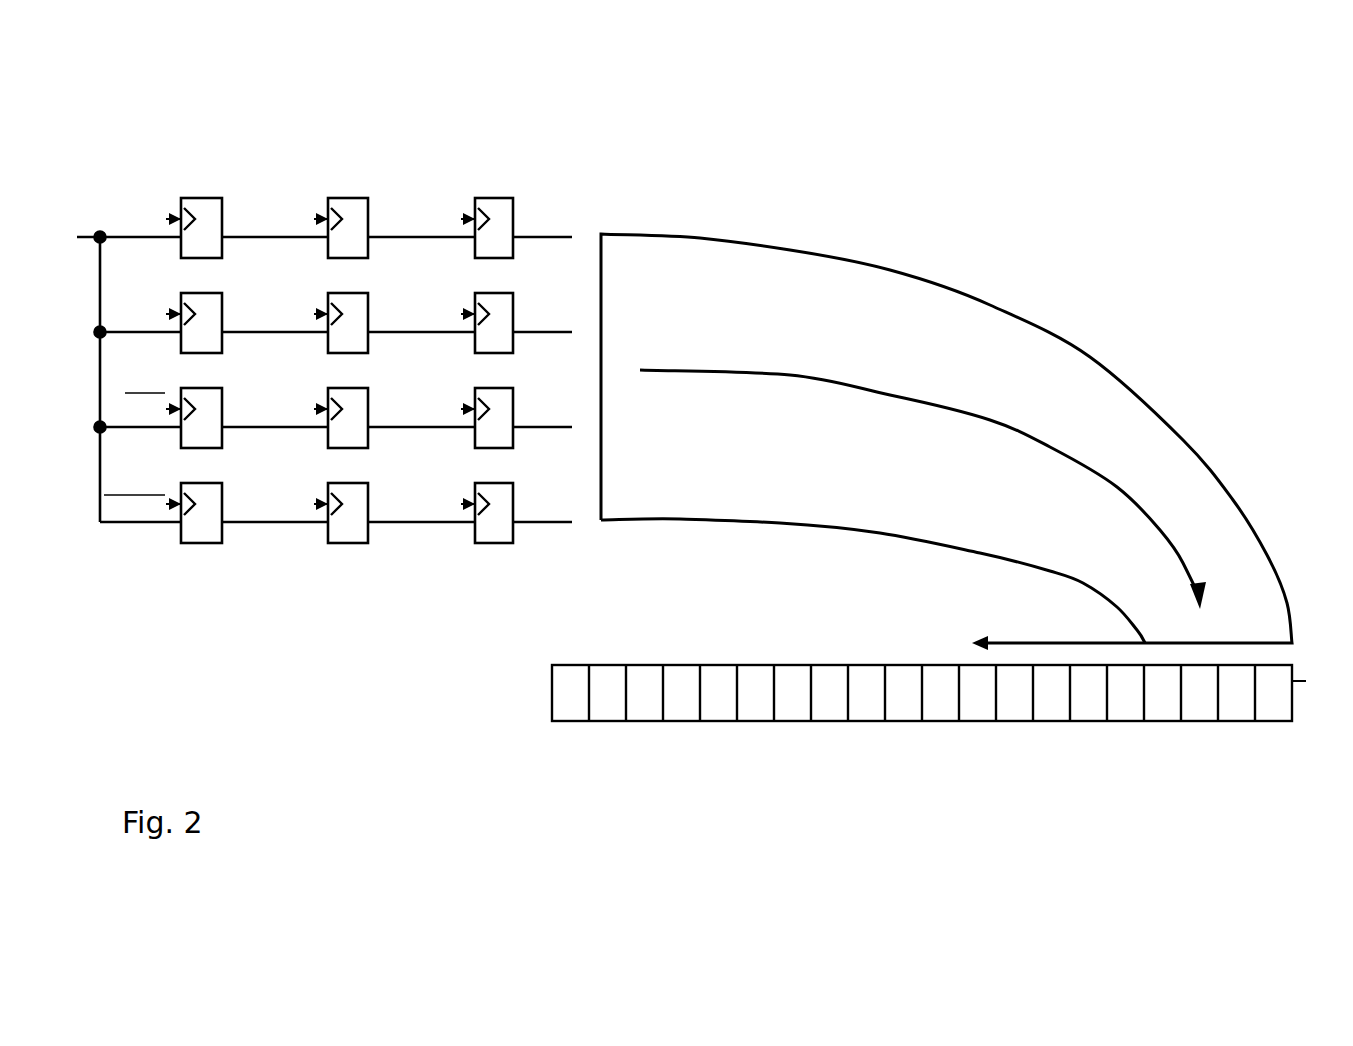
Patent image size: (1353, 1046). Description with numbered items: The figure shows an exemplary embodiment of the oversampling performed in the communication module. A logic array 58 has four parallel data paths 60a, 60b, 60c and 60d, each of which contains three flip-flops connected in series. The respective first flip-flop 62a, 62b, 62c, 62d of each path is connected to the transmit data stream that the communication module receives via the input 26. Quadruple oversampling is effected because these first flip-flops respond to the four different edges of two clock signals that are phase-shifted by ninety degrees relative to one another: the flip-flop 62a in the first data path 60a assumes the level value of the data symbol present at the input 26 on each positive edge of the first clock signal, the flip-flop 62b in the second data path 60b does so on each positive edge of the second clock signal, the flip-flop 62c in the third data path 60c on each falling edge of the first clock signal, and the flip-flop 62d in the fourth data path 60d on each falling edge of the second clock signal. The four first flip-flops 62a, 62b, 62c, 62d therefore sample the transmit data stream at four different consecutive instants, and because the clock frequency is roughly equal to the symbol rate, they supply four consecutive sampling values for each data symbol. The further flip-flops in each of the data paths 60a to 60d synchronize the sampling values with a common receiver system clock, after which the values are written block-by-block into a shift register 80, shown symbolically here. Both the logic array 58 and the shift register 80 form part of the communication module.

The input 26 is at (67, 230).
The logic array 58 is at (401, 141).
The first data path 60a is at (566, 182).
The second data path 60b is at (567, 278).
The third data path 60c is at (566, 434).
The fourth data path 60d is at (548, 530).
The first flip-flop of the first data path 62a is at (203, 198).
The first flip-flop of the second data path 62b is at (212, 305).
The first flip-flop of the third data path 62c is at (212, 430).
The first flip-flop of the fourth data path 62d is at (204, 534).
The shift register 80 is at (1194, 740).